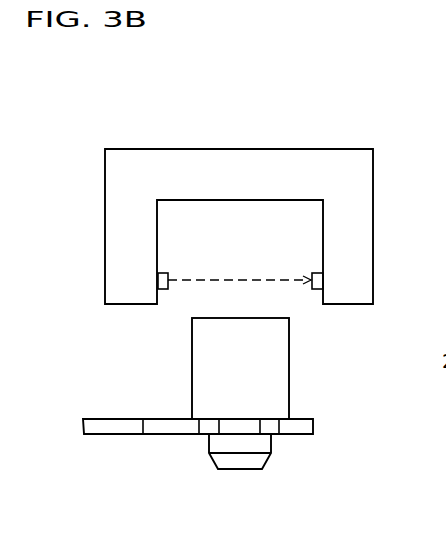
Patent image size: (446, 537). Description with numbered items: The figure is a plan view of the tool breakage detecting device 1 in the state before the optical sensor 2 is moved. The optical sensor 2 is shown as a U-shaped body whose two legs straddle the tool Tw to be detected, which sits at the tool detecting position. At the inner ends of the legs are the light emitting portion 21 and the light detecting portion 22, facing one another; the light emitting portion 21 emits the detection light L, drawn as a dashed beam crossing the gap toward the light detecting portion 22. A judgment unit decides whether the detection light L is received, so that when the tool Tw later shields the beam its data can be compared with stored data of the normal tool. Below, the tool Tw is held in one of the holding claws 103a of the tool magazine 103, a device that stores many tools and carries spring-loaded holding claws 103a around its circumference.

The tool breakage detecting device 1 is at (239, 222).
The optical sensor 2 is at (207, 149).
The light emitting portion 21 is at (163, 290).
The light detecting portion 22 is at (318, 290).
The detection light L is at (230, 278).
The tool to be detected Tw is at (289, 394).
The tool magazine 103 is at (112, 434).
The holding claw 103a is at (283, 432).